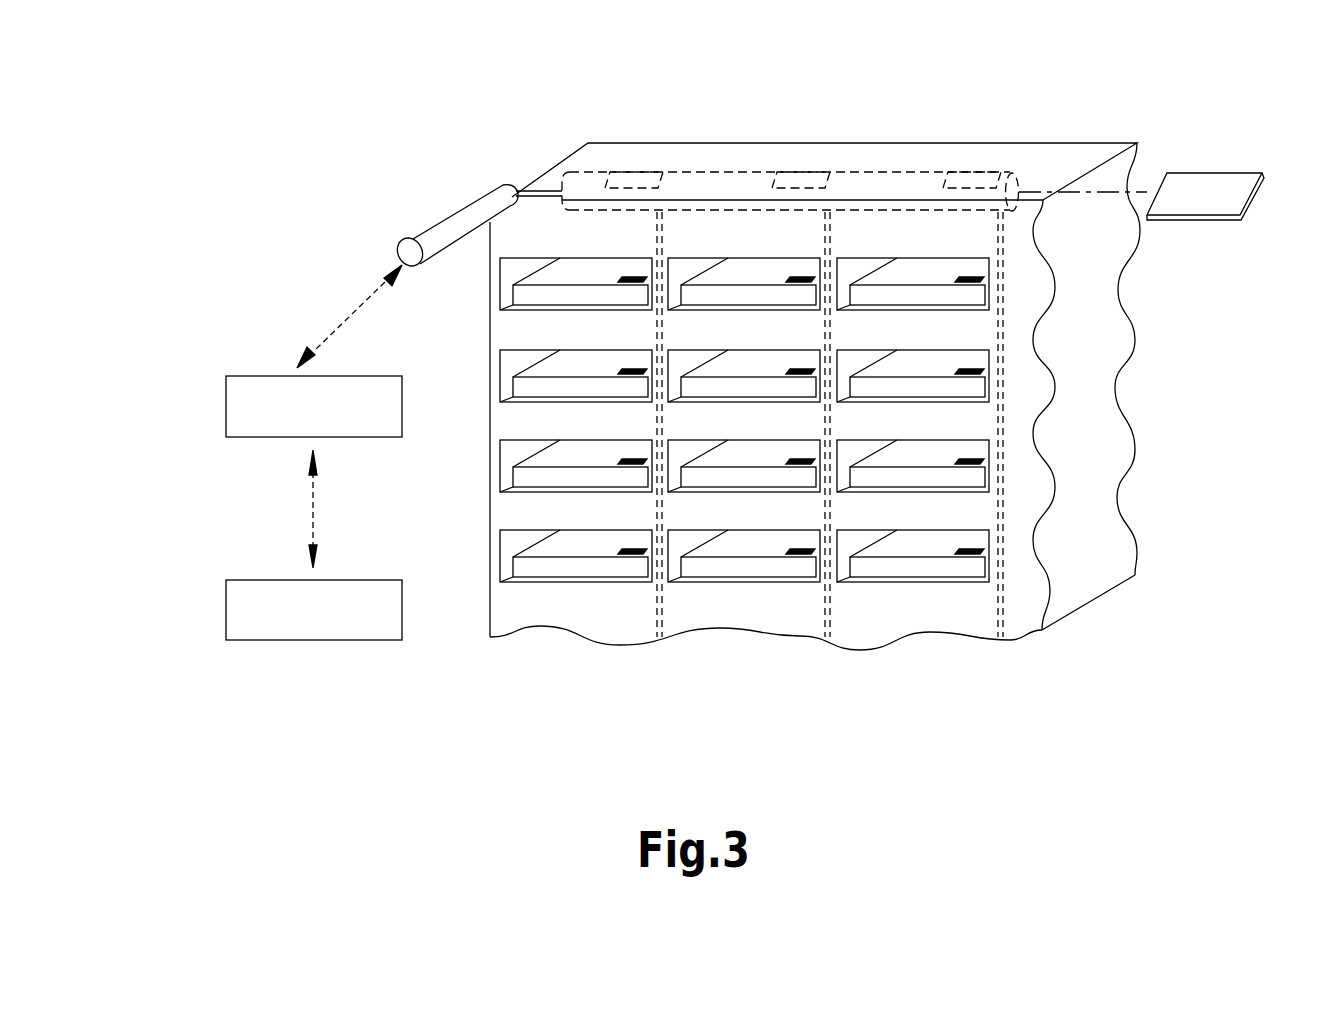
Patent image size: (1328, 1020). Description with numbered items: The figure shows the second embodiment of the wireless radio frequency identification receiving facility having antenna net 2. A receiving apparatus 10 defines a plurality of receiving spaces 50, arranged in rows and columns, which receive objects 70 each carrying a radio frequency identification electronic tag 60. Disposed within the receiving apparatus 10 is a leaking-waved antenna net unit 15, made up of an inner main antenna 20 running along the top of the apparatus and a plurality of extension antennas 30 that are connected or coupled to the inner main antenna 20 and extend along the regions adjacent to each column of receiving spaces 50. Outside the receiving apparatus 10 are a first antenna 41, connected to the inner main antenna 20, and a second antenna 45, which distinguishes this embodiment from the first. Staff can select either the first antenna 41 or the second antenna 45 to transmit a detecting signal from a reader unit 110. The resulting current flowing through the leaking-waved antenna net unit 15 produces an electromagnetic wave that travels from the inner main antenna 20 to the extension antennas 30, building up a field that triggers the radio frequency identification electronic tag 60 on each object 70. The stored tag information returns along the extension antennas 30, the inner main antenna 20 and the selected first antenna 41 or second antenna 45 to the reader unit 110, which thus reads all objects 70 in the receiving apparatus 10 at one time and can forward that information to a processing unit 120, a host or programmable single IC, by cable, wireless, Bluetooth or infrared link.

The wireless radio frequency identification receiving facility having antenna net 2 is at (1088, 122).
The receiving apparatus 10 is at (1117, 527).
The leaking-waved antenna net unit 15 is at (1242, 318).
The inner main antenna 20 is at (1018, 211).
The extension antennas 30 is at (1005, 381).
The first antenna 41 is at (450, 217).
The second antenna 45 is at (1230, 175).
The receiving spaces 50 is at (507, 443).
The radio frequency identification electronic tag 60 is at (573, 352).
The objects 70 is at (550, 387).
The reader unit 110 is at (226, 400).
The processing unit 120 is at (226, 607).